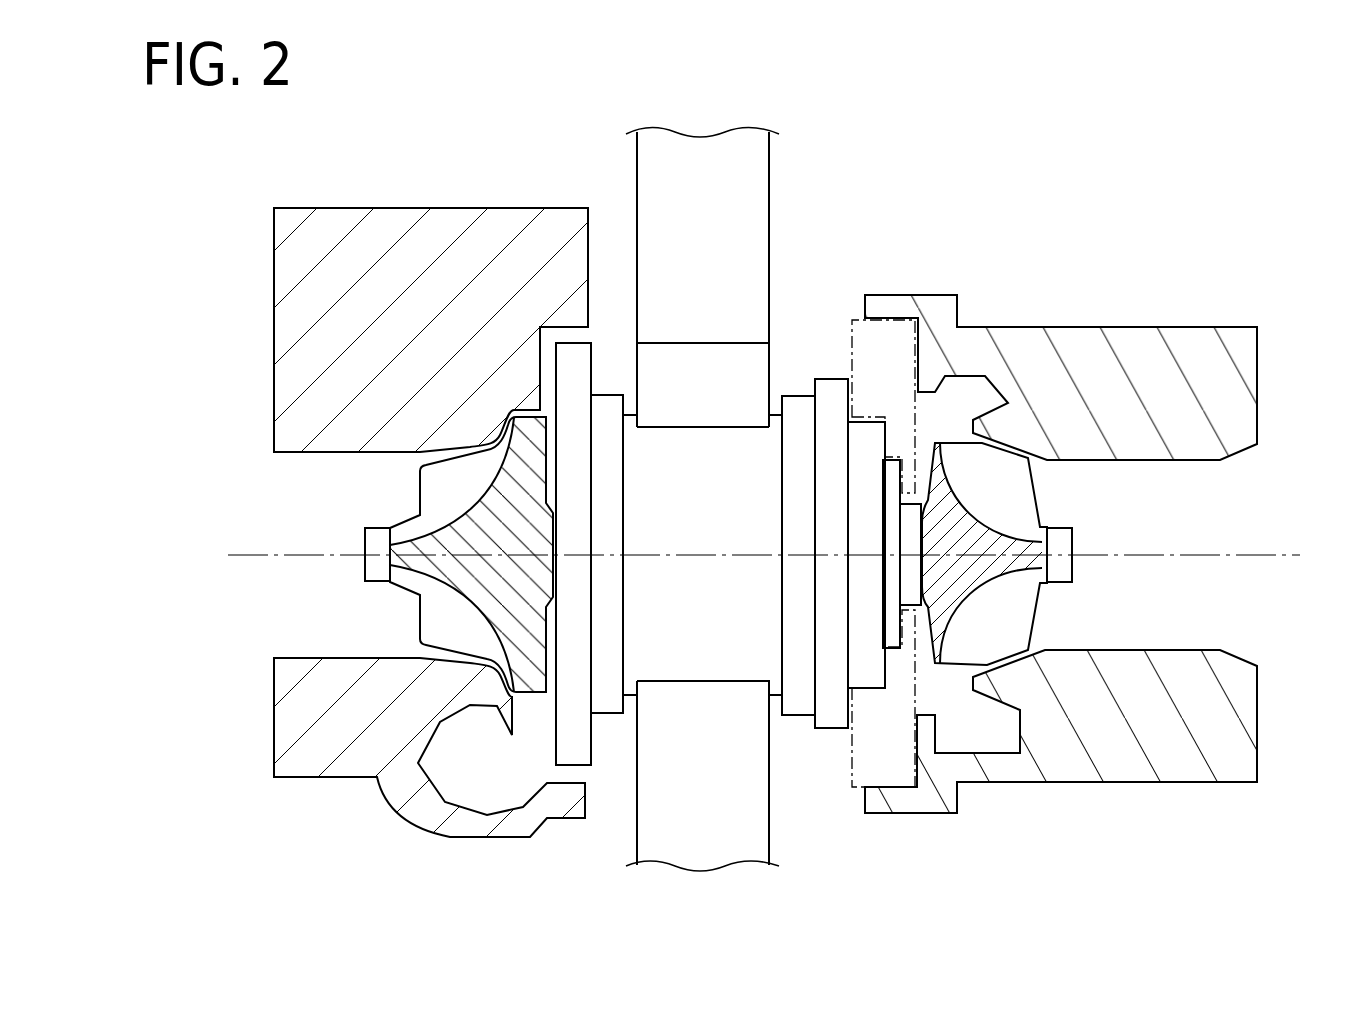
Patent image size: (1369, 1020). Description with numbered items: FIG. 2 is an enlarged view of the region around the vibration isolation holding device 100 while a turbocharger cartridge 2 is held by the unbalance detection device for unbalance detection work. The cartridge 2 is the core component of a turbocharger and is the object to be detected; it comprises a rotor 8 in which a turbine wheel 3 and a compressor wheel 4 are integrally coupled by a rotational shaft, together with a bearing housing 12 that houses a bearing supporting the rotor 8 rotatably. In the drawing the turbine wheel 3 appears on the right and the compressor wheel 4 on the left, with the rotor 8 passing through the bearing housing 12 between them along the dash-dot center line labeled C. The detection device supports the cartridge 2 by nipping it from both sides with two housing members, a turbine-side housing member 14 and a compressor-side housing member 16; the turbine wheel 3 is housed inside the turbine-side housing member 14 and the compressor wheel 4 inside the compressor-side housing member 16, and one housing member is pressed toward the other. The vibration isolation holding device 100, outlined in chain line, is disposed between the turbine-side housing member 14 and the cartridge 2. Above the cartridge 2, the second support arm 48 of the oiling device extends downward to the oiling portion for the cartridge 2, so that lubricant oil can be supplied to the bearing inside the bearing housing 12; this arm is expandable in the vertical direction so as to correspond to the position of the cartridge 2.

The cartridge 2 is at (550, 895).
The turbine wheel 3 is at (1014, 623).
The compressor wheel 4 is at (437, 627).
The rotor 8 is at (637, 370).
The bearing housing 12 is at (797, 715).
The turbine-side housing member 14 is at (1171, 326).
The compressor-side housing member 16 is at (440, 207).
The second support arm 48 is at (637, 153).
The vibration isolation holding device 100 is at (852, 312).
The rotational axis C is at (1297, 553).